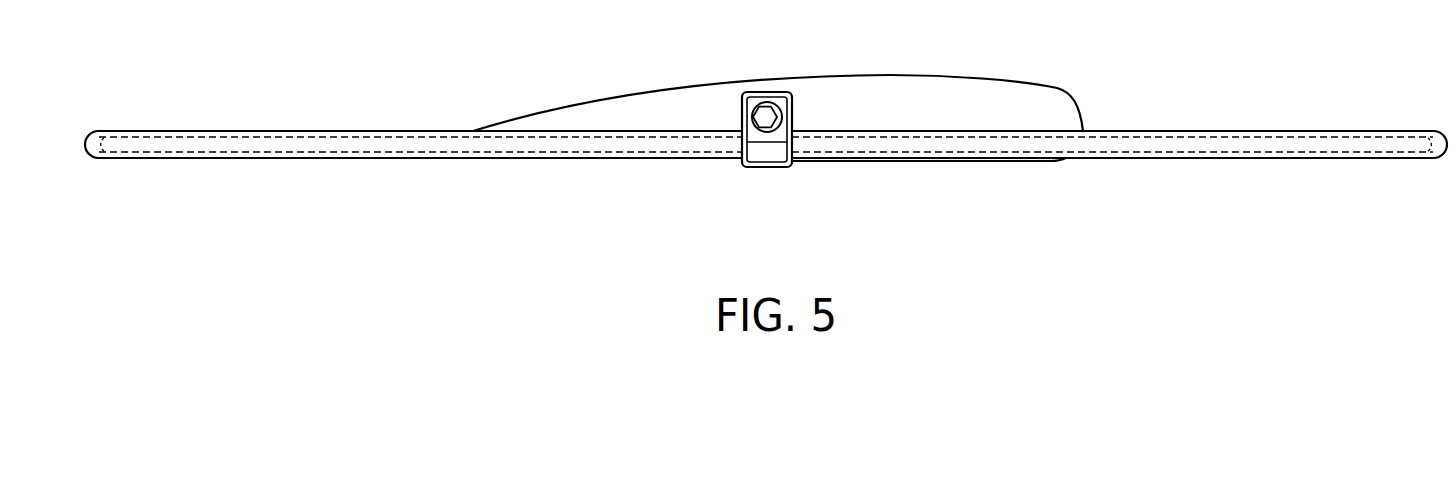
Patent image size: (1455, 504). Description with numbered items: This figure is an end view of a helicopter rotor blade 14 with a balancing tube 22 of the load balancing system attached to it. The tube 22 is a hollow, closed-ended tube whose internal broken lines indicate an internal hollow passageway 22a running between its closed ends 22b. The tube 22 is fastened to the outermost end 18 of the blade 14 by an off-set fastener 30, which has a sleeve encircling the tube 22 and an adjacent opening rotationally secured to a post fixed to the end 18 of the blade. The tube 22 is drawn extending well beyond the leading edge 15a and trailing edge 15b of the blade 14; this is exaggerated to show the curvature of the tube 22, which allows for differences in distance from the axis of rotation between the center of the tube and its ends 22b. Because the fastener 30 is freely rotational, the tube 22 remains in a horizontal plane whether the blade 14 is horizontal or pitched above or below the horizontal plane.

The blade 14 is at (898, 74).
The leading edge 15a is at (1073, 95).
The trailing edge 15b is at (503, 128).
The outermost end 18 is at (688, 107).
The tube 22 is at (1212, 159).
The internal hollow passageway 22a is at (395, 143).
The closed ends 22b is at (86, 130).
The off-set fastener 30 is at (791, 176).